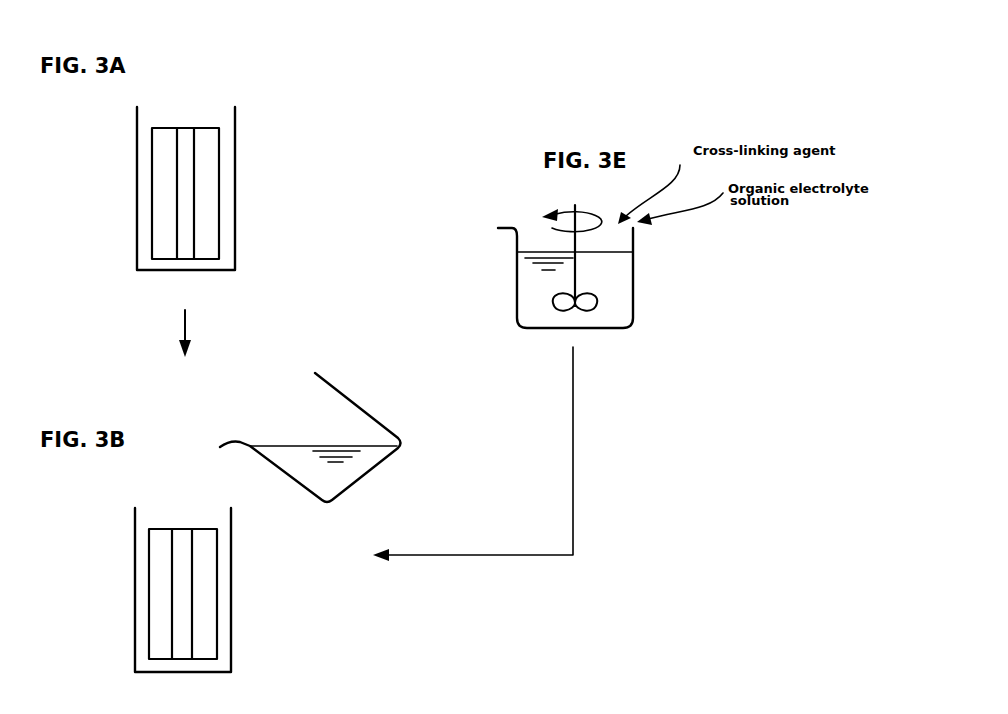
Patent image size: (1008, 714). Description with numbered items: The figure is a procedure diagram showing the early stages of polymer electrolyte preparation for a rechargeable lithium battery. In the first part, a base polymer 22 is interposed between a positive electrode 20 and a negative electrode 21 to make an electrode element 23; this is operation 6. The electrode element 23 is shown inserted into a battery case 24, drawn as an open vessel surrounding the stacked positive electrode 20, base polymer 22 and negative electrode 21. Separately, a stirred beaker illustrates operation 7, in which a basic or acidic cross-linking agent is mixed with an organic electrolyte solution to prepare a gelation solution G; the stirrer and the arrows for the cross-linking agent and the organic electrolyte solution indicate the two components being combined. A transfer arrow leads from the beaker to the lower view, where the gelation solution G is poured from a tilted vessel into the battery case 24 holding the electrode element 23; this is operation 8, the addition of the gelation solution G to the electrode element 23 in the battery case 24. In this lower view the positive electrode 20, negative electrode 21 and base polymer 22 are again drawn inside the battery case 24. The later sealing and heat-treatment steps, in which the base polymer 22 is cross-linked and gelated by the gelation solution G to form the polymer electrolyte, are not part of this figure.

In FIG. 3A, the positive electrode 20 is at (165, 211).
In FIG. 3B, the positive electrode 20 is at (162, 612).
In FIG. 3A, the negative electrode 21 is at (205, 218).
In FIG. 3B, the negative electrode 21 is at (202, 617).
In FIG. 3A, the base polymer 22 is at (183, 251).
In FIG. 3B, the base polymer 22 is at (180, 652).
In FIG. 3A, the electrode element 23 is at (210, 118).
In FIG. 3B, the electrode element 23 is at (232, 583).
In FIG. 3A, the battery case 24 is at (237, 117).
In FIG. 3B, the battery case 24 is at (233, 522).
In FIG. 3B, the gelation solution G is at (363, 462).
In FIG. 3E, the gelation solution G is at (622, 310).
In FIG. 3A, the operation of making the electrode element 6 is at (375, 182).
In FIG. 3E, the operation of preparing the gelation solution 7 is at (777, 292).
In FIG. 3B, the operation of adding the gelation solution 8 is at (400, 653).